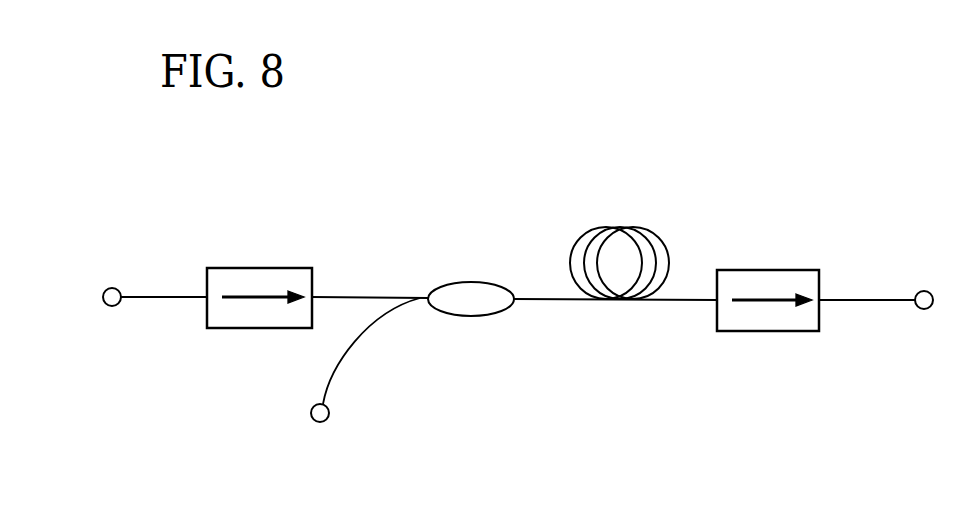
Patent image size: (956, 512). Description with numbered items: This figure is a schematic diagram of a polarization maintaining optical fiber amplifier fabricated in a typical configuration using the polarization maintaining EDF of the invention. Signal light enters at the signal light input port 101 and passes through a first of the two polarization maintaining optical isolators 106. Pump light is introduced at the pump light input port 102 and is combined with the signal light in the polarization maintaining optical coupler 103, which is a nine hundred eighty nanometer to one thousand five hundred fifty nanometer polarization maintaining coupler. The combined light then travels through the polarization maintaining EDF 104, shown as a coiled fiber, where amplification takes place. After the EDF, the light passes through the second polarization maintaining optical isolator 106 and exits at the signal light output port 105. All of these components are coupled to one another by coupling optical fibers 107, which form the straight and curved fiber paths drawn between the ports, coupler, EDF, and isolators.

The signal light input port 101 is at (112, 288).
The pump light input port 102 is at (326, 421).
The polarization maintaining optical coupler 103 is at (478, 308).
The polarization maintaining EDF 104 is at (646, 240).
The signal light output port 105 is at (920, 310).
The polarization maintaining optical isolator 106 is at (258, 276).
The coupling optical fiber 107 is at (160, 302).